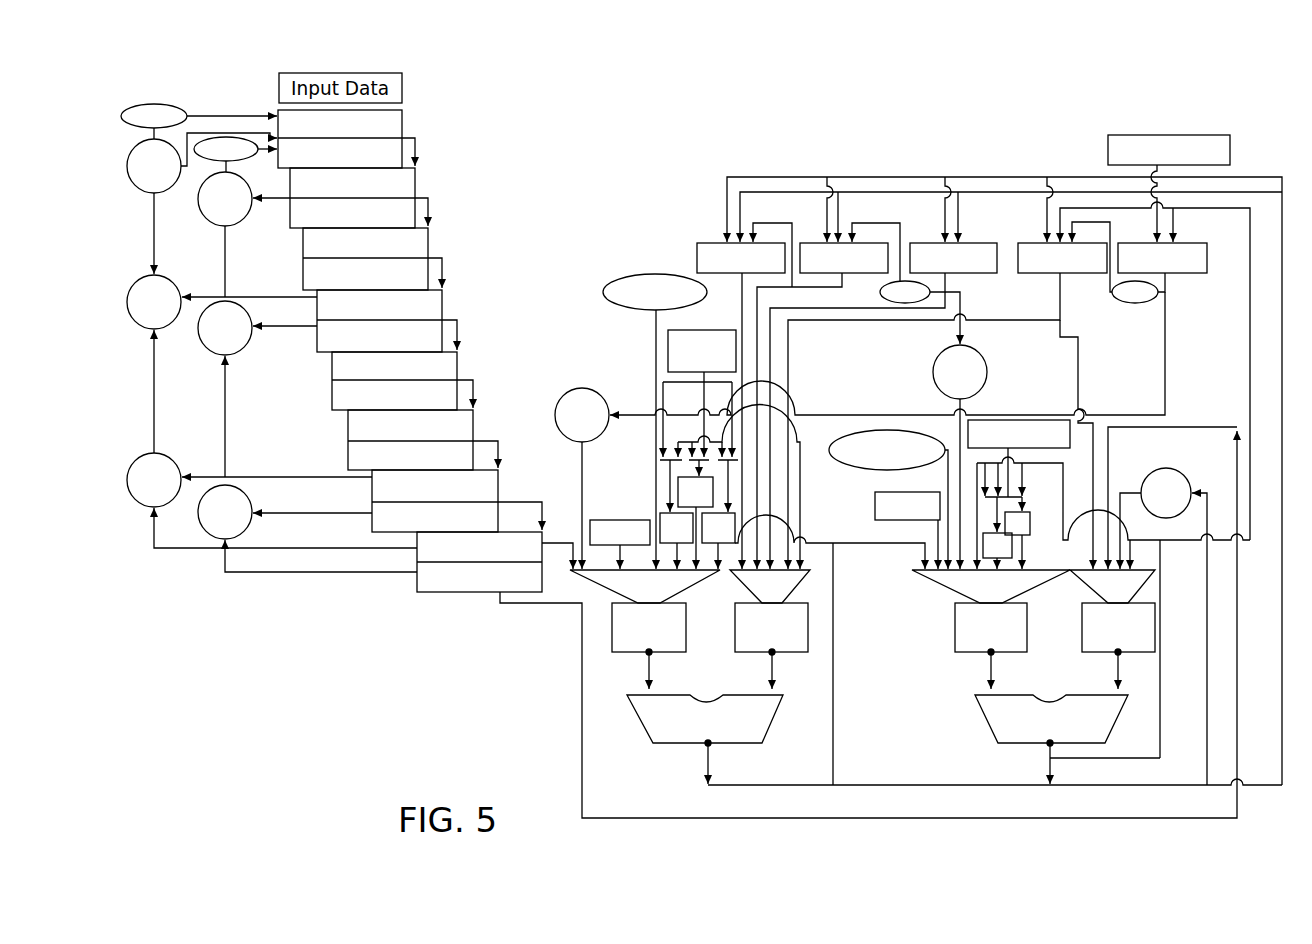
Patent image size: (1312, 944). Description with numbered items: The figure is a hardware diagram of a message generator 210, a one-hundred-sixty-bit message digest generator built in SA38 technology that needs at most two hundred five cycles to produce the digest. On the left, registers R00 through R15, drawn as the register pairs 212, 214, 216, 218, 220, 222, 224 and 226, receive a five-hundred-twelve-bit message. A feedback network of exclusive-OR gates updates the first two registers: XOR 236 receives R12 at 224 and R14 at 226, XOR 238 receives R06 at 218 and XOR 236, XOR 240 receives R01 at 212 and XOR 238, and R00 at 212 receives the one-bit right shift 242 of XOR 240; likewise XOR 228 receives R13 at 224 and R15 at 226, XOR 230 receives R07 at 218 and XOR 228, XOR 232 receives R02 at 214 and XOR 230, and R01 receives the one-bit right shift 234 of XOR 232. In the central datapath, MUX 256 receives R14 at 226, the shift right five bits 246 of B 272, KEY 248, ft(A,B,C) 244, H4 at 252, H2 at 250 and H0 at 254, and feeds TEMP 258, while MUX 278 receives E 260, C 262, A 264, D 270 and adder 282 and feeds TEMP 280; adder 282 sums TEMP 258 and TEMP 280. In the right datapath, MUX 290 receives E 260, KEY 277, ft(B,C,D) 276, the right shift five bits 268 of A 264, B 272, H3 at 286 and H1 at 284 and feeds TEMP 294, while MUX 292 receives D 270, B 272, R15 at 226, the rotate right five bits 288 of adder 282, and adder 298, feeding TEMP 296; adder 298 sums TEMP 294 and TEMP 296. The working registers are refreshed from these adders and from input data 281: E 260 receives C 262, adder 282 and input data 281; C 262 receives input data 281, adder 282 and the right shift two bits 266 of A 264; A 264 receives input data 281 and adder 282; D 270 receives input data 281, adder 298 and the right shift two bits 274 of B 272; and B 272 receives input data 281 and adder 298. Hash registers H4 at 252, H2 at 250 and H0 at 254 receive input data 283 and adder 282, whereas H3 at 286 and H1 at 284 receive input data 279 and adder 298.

The message generator 210 is at (411, 720).
The registers R00 and R01 212 is at (402, 120).
The registers R02 and R03 214 is at (415, 190).
The registers R04 and R05 216 is at (428, 247).
The registers R06 and R07 218 is at (442, 307).
The registers R08 and R09 220 is at (457, 362).
The registers R10 and R11 222 is at (348, 428).
The registers R12 and R13 224 is at (372, 497).
The registers R14 and R15 226 is at (417, 586).
The XOR 228 is at (207, 533).
The XOR 230 is at (206, 349).
The XOR 232 is at (210, 223).
The 1-bit right shift 234 is at (224, 137).
The XOR 236 is at (138, 459).
The XOR 238 is at (140, 327).
The XOR 240 is at (136, 191).
The 1-bit right shift 242 is at (167, 104).
The ft(A,B,C) function 244 is at (638, 275).
The shift right 5 bits of B 246 is at (572, 390).
The KEY 248 is at (603, 520).
The H2 250 is at (678, 490).
The H4 252 is at (684, 546).
The H0 254 is at (724, 546).
The MUX 256 is at (600, 586).
The TEMP 258 is at (637, 653).
The E 260 is at (716, 242).
The C 262 is at (806, 242).
The A 264 is at (925, 242).
The right shift 2 bits of A 266 is at (892, 304).
The right shift 5 bits of A 268 is at (983, 357).
The D 270 is at (1030, 242).
The B 272 is at (1185, 242).
The right shift 2 bits of B 274 is at (1130, 304).
The ft(B,C,D) function 276 is at (878, 430).
The KEY 277 is at (875, 505).
The MUX 278 is at (805, 586).
The input data 279 is at (1047, 420).
The TEMP 280 is at (792, 653).
The input data 281 is at (1108, 150).
The adder 282 is at (683, 744).
The input data 283 is at (692, 330).
The H1 284 is at (1028, 512).
The H3 286 is at (1012, 548).
The rotate right 5 bits 288 is at (1150, 472).
The MUX 290 is at (930, 580).
The MUX 292 is at (1082, 586).
The TEMP 294 is at (955, 640).
The TEMP 296 is at (1082, 648).
The adder 298 is at (1000, 740).